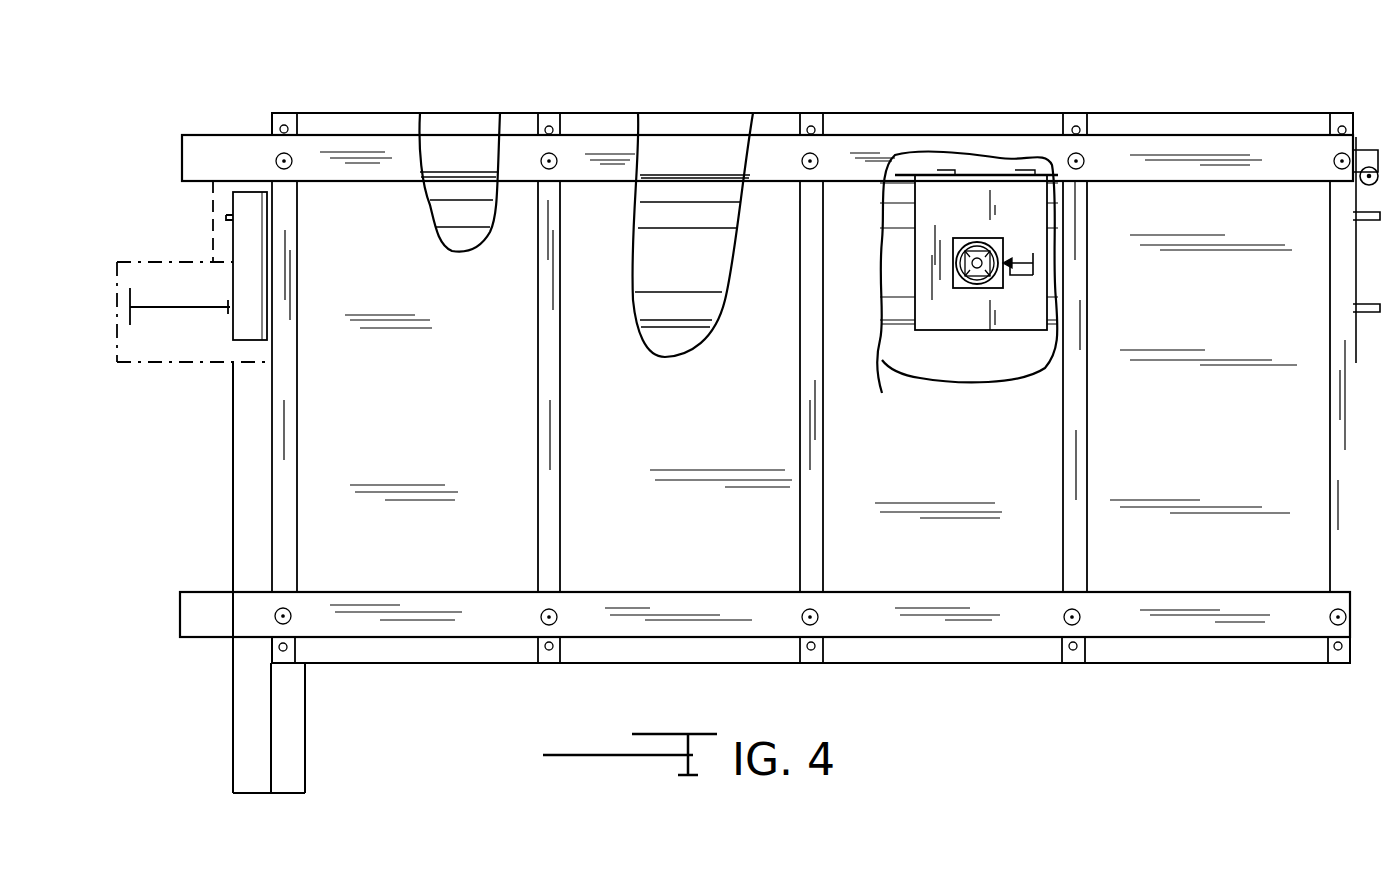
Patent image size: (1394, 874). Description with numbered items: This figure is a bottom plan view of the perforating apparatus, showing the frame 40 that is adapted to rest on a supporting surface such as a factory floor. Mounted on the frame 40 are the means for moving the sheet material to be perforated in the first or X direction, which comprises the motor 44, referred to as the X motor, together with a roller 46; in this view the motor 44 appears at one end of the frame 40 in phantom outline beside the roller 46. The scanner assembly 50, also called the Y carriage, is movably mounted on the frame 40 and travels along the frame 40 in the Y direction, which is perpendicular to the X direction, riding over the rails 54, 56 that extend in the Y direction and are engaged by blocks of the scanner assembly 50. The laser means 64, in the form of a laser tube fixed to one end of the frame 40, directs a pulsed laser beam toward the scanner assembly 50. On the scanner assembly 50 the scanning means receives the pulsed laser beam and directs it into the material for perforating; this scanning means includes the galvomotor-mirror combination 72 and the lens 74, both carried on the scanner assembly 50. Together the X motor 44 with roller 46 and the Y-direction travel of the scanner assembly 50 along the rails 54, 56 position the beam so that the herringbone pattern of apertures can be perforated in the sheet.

The frame 40 is at (567, 580).
The motor 44 is at (162, 365).
The roller 46 is at (458, 190).
The scanner assembly 50 is at (912, 304).
The rail 54 is at (686, 195).
The rail 56 is at (665, 357).
The laser means 64 is at (255, 515).
The galvomotor-mirror combination 72 is at (1020, 276).
The lens 74 is at (975, 290).